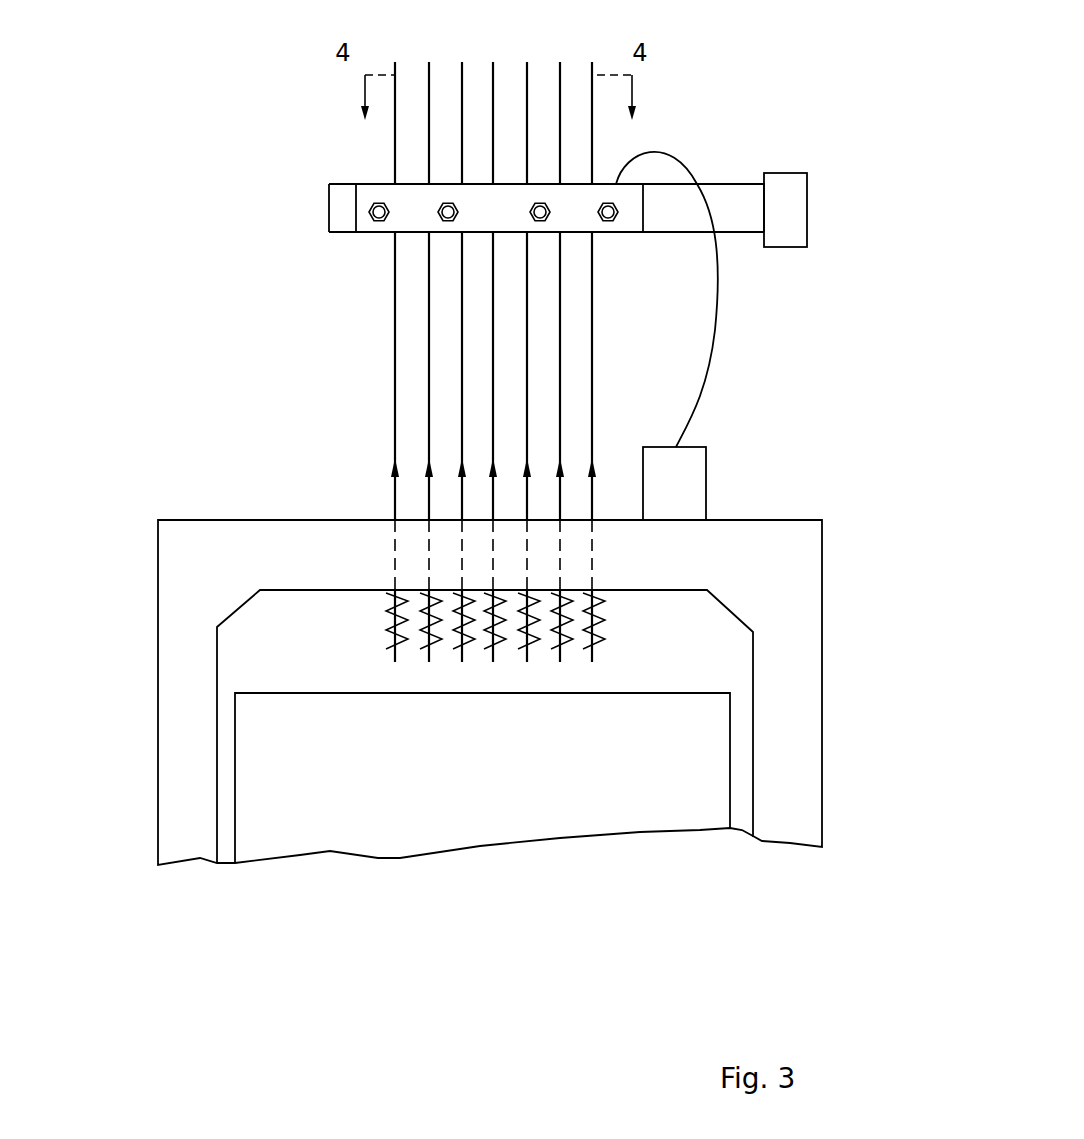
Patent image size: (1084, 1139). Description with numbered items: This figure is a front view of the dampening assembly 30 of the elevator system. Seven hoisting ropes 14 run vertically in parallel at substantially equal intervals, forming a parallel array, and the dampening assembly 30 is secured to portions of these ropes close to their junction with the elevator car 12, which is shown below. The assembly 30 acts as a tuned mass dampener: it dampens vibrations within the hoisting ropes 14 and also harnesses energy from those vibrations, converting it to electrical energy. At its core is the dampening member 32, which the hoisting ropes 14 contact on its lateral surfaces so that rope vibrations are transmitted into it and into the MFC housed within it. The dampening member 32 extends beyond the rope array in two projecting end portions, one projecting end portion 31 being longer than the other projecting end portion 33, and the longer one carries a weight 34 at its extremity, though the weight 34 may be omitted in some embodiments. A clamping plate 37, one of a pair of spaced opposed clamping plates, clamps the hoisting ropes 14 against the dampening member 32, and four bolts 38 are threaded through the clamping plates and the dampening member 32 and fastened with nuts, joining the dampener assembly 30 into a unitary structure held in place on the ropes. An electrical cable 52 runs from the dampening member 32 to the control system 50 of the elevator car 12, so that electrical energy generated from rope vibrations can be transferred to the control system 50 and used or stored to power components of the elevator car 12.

The elevator car 12 is at (157, 705).
The hoisting ropes 14 is at (593, 358).
The dampening assembly 30 is at (838, 124).
The projecting end portion 31 is at (710, 184).
The dampening member 32 is at (660, 210).
The projecting end portion 33 is at (329, 204).
The weight 34 is at (796, 173).
The clamping plate 37 is at (413, 225).
The bolts 38 is at (449, 201).
The control system 50 is at (706, 483).
The electrical cable 52 is at (692, 382).